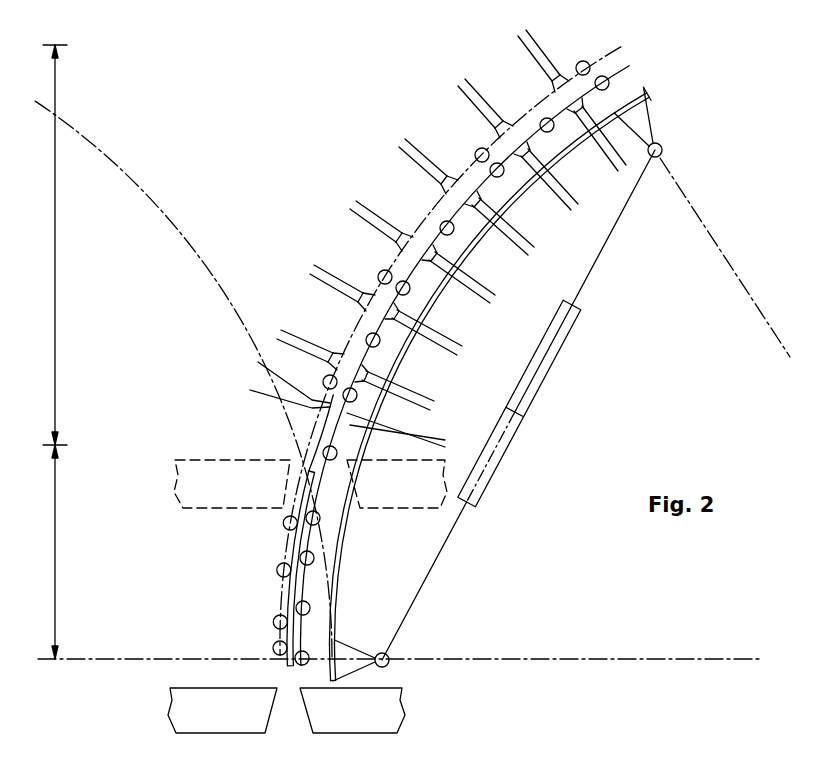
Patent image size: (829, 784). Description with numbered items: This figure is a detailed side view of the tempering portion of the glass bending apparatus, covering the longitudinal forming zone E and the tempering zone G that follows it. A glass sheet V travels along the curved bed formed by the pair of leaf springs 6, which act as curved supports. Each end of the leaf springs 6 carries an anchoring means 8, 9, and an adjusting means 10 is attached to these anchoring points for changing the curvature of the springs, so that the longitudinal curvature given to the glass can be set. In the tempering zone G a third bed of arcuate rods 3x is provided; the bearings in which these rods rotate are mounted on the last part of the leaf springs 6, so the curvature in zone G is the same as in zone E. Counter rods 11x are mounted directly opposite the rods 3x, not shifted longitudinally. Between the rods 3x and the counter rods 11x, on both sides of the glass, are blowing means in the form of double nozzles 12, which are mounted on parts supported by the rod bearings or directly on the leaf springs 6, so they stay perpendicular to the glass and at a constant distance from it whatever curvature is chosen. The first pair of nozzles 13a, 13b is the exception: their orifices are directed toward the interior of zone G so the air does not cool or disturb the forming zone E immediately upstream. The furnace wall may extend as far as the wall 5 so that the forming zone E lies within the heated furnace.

The double nozzles 12 is at (417, 152).
The counter rods 11x is at (380, 270).
The arcuate rods 3x is at (408, 292).
The first nozzle 13a is at (262, 385).
The first nozzle 13b is at (403, 438).
The wall 5 is at (249, 470).
The adjusting means 10 is at (543, 355).
The anchoring means 9 is at (648, 126).
The anchoring means 8 is at (362, 657).
The leaf springs 6 is at (341, 553).
The glass sheet V is at (283, 592).
The tempering zone G is at (51, 245).
The longitudinal forming zone E is at (51, 552).